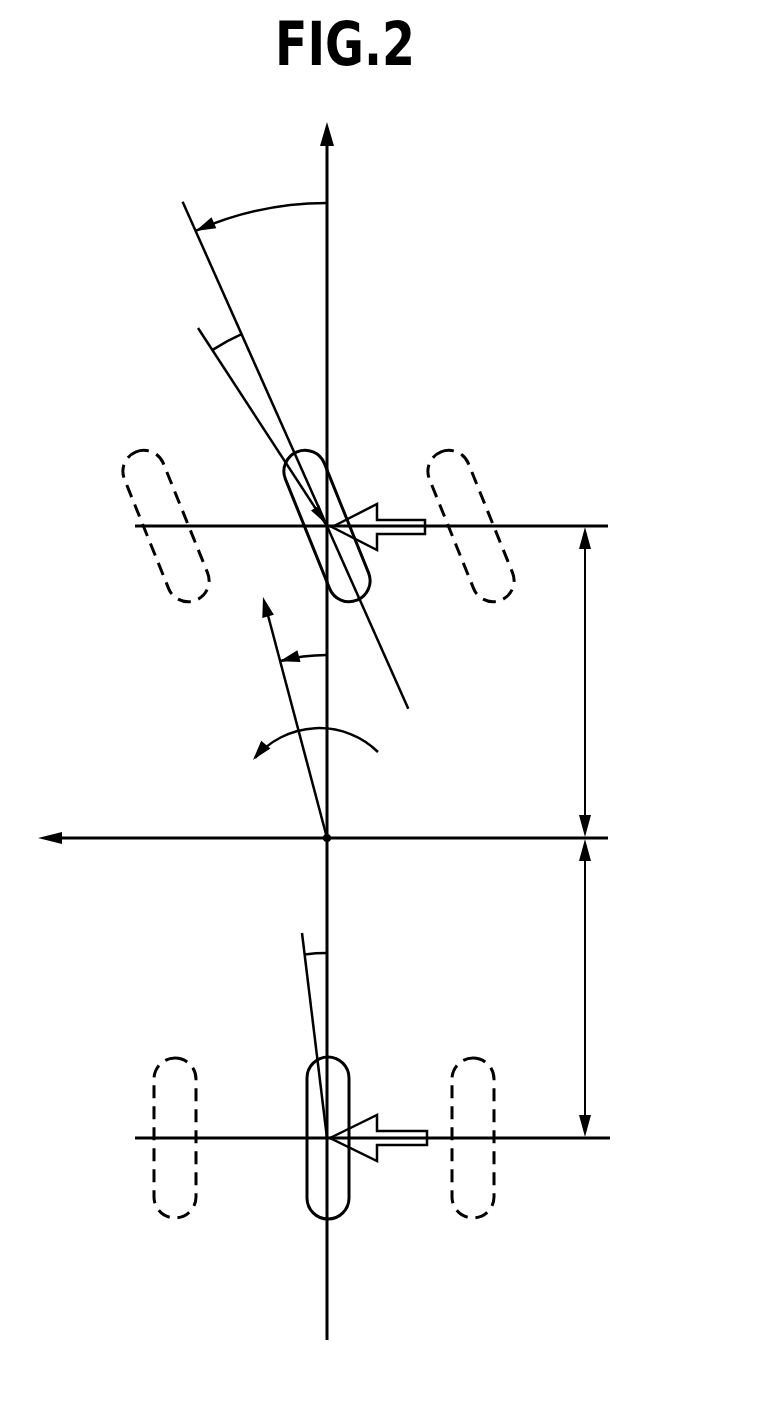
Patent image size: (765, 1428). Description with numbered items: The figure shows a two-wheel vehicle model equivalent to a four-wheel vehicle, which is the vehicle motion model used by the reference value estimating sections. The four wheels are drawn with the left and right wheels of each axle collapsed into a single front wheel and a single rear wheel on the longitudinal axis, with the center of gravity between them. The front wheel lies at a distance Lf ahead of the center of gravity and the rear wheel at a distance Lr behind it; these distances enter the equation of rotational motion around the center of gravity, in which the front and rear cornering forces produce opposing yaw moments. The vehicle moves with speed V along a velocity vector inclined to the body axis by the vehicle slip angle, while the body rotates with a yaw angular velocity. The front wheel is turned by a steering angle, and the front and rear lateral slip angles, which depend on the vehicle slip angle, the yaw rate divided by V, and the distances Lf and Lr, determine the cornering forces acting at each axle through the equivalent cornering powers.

The vehicle speed V is at (287, 698).
The distance from the center of gravity to the front wheels Lf is at (608, 682).
The distance from the center of gravity to the rear wheels Lr is at (609, 988).